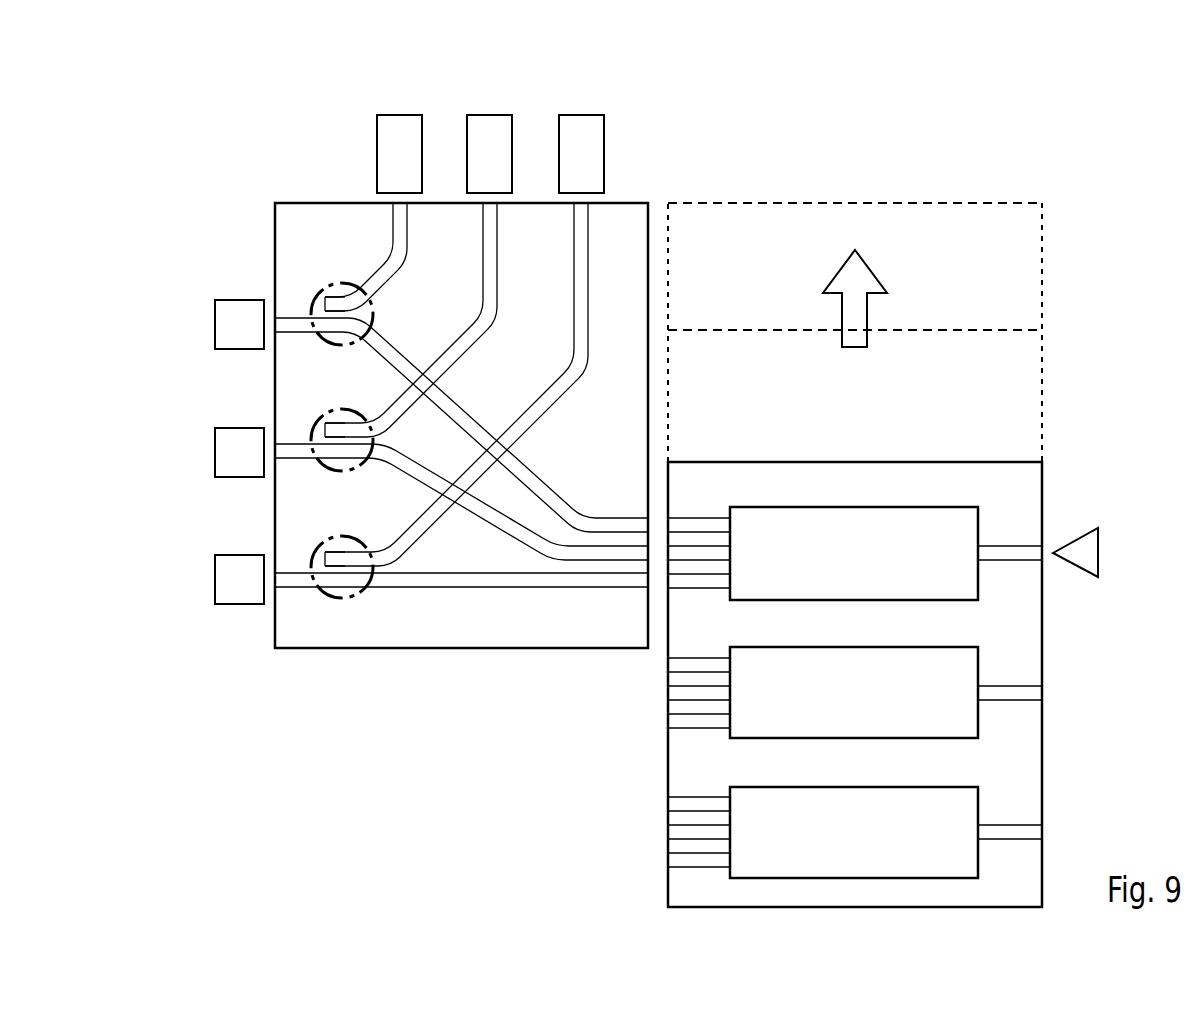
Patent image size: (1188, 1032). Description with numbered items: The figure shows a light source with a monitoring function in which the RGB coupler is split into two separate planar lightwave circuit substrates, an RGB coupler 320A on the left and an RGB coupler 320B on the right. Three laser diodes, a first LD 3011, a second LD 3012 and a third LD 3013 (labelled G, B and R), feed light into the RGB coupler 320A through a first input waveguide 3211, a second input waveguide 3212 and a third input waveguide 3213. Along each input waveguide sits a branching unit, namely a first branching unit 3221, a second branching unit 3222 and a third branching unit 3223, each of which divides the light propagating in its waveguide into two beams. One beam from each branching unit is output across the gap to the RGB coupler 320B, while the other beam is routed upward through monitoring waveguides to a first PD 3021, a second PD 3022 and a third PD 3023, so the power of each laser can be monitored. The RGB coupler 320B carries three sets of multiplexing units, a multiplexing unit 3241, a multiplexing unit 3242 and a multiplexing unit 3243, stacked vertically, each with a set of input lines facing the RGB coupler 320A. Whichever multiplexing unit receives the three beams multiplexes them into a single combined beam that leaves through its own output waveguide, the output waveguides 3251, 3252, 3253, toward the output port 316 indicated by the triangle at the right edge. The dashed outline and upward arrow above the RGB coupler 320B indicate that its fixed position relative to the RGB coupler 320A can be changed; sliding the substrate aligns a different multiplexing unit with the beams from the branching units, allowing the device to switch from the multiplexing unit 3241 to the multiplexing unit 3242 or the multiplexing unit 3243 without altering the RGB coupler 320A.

The first LD 3011 is at (213, 328).
The second LD 3012 is at (213, 456).
The third LD 3013 is at (213, 584).
The first PD 3021 is at (400, 113).
The second PD 3022 is at (490, 113).
The third PD 3023 is at (581, 113).
The output port 316 is at (1100, 553).
The RGB coupler 320A is at (460, 648).
The RGB coupler 320B is at (668, 760).
The first input waveguide 3211 is at (292, 314).
The second input waveguide 3212 is at (292, 440).
The third input waveguide 3213 is at (292, 568).
The first branching unit 3221 is at (345, 278).
The second branching unit 3222 is at (345, 404).
The third branching unit 3223 is at (345, 535).
The multiplexing unit 3241 is at (862, 507).
The multiplexing unit 3242 is at (862, 647).
The multiplexing unit 3243 is at (862, 787).
The output waveguide 3251 is at (1010, 545).
The output waveguide 3252 is at (1010, 687).
The output waveguide 3253 is at (1010, 827).